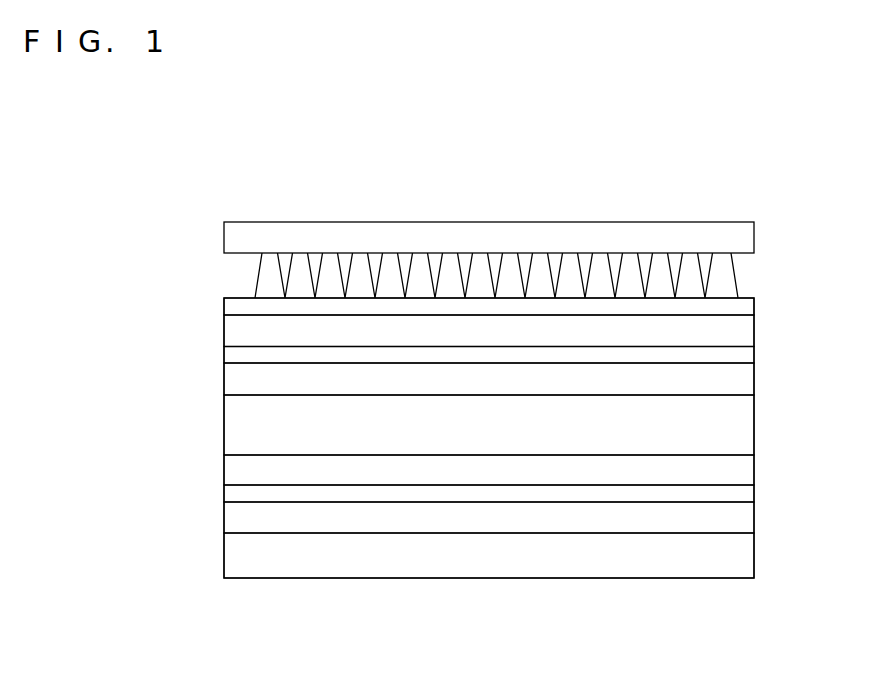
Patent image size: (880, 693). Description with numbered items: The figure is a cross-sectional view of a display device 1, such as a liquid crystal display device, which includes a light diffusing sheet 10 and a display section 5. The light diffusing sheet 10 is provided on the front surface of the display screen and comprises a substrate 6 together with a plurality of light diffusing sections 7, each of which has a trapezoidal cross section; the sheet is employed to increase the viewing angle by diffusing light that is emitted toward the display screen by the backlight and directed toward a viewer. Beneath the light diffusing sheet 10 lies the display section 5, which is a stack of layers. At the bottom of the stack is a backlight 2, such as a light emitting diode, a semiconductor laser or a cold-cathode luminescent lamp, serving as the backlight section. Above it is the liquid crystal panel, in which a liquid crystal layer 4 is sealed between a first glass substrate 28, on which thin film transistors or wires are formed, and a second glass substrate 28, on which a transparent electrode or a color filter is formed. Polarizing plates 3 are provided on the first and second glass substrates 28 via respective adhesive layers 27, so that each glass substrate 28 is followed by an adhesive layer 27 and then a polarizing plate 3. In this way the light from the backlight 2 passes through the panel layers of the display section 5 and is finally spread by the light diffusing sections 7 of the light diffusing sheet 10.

The display device 1 is at (539, 444).
The backlight 2 is at (512, 555).
The polarizing plates 3 is at (745, 381).
The liquid crystal layer 4 is at (745, 424).
The display section 5 is at (539, 435).
The substrate 6 is at (745, 238).
The light diffusing sections 7 is at (725, 274).
The light diffusing sheet 10 is at (536, 260).
The adhesive layers 27 is at (745, 309).
The glass substrates 28 is at (745, 331).